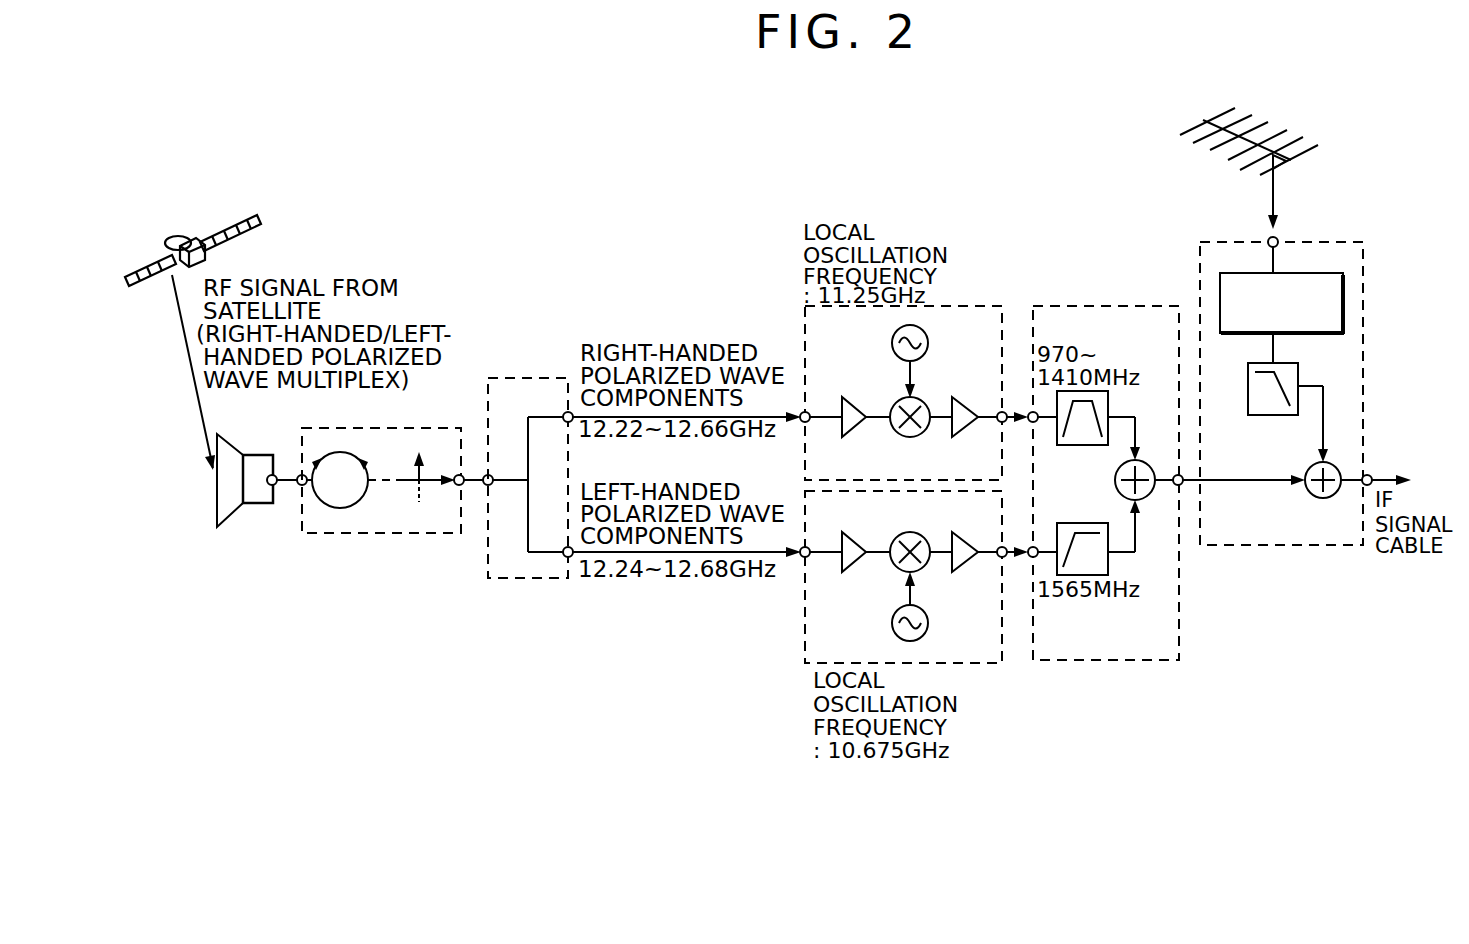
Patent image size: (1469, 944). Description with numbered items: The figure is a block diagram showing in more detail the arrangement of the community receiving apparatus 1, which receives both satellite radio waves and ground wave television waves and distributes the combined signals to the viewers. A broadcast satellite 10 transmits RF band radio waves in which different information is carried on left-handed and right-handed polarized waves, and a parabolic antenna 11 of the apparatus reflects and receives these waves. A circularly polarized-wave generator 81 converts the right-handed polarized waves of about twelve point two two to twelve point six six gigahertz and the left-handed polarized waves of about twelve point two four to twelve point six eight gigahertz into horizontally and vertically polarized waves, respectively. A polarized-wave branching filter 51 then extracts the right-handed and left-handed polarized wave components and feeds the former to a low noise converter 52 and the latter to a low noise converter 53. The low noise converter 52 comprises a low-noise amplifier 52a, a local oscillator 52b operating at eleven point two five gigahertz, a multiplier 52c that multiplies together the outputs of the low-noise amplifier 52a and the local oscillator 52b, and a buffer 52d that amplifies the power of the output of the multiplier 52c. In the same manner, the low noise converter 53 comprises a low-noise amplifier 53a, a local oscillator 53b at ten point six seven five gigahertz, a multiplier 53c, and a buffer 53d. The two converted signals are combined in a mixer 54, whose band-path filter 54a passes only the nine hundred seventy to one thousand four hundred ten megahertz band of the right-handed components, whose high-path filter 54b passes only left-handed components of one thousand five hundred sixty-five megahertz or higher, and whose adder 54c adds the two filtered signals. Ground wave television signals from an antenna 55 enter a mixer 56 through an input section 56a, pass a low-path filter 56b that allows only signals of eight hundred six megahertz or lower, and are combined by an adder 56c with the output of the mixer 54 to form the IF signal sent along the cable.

The community receiving apparatus 1 is at (599, 666).
The broadcast satellite 10 is at (189, 236).
The parabolic antenna 11 is at (251, 520).
The circularly polarized-wave generator 81 is at (411, 535).
The polarized-wave branching filter 51 is at (531, 580).
The low noise converter 52 is at (868, 383).
The low-noise amplifier 52a is at (838, 438).
The local oscillator 52b is at (928, 341).
The multiplier 52c is at (908, 437).
The buffer 52d is at (968, 438).
The low noise converter 53 is at (860, 577).
The low-noise amplifier 53a is at (843, 534).
The local oscillator 53b is at (928, 622).
The multiplier 53c is at (908, 532).
The buffer 53d is at (968, 534).
The mixer 54 is at (1105, 517).
The band-path filter 54a is at (1053, 441).
The high-path filter 54b is at (1079, 522).
The adder 54c is at (1142, 500).
The antenna for a ground wave television broadcast 55 is at (1279, 134).
The mixer 56 is at (1286, 427).
The input section 56a is at (1290, 273).
The low-path filter 56b is at (1289, 372).
The adder 56c is at (1320, 498).